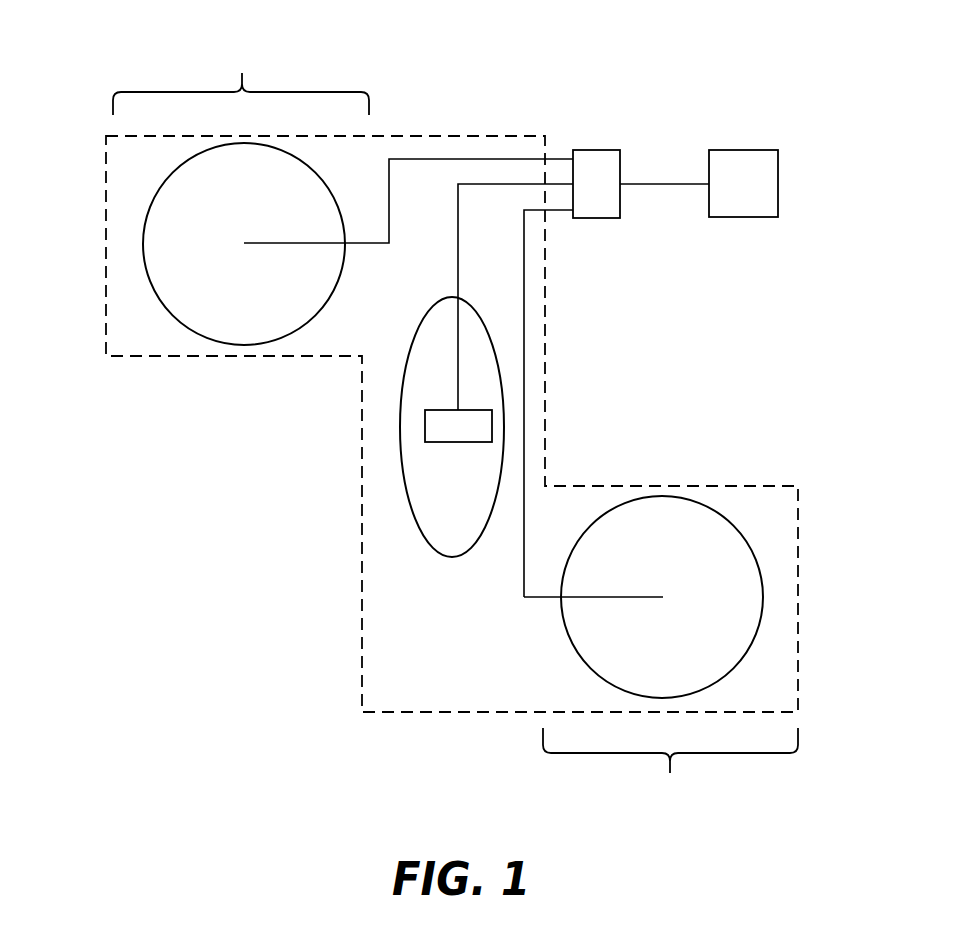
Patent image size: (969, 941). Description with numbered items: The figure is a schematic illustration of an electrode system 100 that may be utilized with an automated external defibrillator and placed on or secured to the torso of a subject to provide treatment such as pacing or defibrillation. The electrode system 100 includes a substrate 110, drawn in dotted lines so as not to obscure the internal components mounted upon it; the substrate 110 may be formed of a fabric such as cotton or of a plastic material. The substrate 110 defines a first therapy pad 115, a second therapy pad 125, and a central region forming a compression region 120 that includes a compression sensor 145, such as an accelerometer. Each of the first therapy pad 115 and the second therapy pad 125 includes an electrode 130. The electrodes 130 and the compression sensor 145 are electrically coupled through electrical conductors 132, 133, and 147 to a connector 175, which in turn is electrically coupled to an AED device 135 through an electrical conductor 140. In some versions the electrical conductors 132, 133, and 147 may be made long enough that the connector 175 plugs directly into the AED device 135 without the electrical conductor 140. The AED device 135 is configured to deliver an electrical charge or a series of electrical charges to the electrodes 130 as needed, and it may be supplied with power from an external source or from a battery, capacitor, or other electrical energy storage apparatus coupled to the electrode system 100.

The electrode system 100 is at (718, 52).
The substrate 110 is at (420, 656).
The first therapy pad 115 is at (241, 78).
The compression region 120 is at (398, 434).
The second therapy pad 125 is at (670, 768).
The electrode 130 is at (165, 310).
The electrical conductor 132 is at (433, 159).
The electrical conductor 133 is at (524, 315).
The AED device 135 is at (732, 150).
The electrical conductor 140 is at (660, 184).
The compression sensor 145 is at (492, 416).
The electrical conductor 147 is at (458, 272).
The connector 175 is at (597, 150).